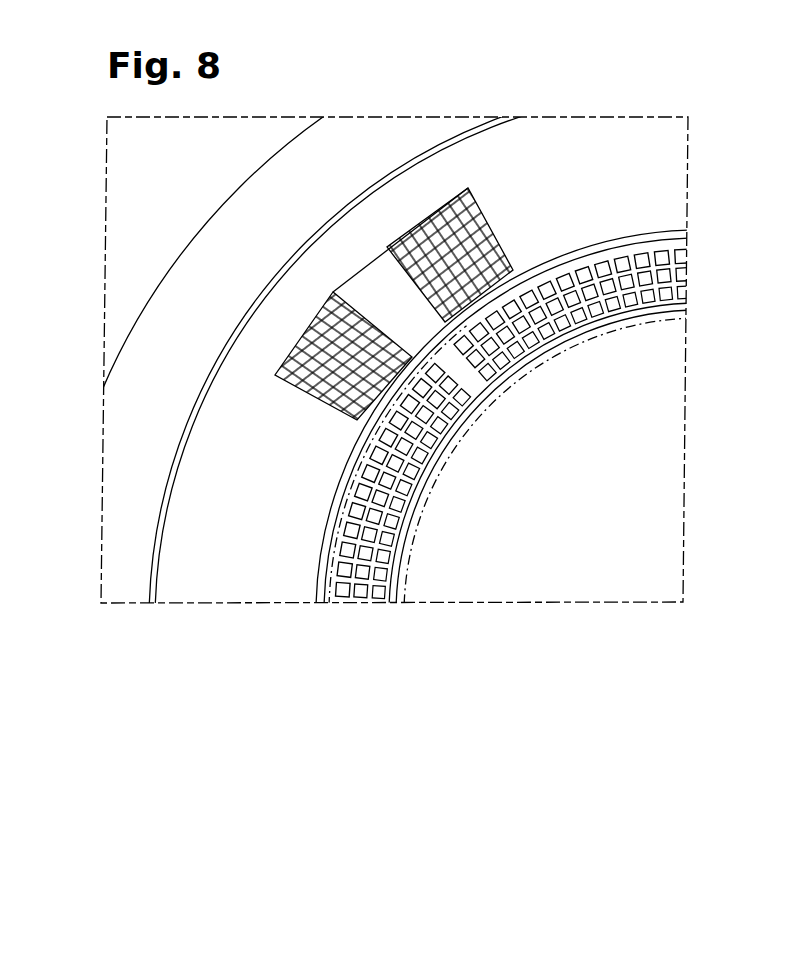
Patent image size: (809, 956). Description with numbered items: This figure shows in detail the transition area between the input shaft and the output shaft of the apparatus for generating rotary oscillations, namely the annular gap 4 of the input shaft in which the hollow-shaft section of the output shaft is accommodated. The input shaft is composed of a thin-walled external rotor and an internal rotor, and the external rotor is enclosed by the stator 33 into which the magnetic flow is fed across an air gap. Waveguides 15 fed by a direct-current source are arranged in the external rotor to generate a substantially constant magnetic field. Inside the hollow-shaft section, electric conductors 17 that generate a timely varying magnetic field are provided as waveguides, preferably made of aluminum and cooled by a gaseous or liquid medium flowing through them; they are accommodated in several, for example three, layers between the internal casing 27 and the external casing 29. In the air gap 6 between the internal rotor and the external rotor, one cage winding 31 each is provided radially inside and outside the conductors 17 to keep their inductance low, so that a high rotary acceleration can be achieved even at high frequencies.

The stator 33 is at (143, 443).
The waveguides 15 is at (472, 252).
The electric conductors 17 is at (358, 603).
The external casing 29 is at (340, 603).
The internal casing 27 is at (376, 603).
The cage winding 31 is at (312, 603).
The air gap 6 is at (323, 603).
The annular gap 4 is at (390, 603).